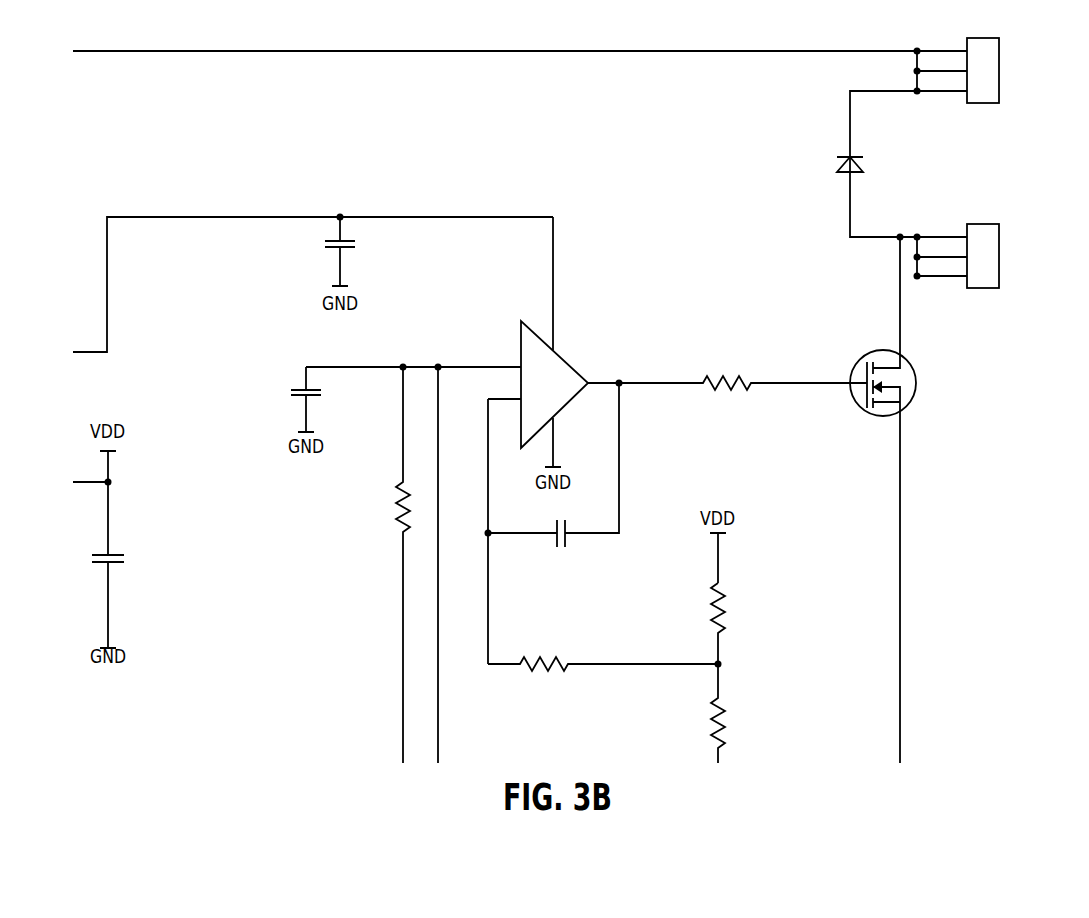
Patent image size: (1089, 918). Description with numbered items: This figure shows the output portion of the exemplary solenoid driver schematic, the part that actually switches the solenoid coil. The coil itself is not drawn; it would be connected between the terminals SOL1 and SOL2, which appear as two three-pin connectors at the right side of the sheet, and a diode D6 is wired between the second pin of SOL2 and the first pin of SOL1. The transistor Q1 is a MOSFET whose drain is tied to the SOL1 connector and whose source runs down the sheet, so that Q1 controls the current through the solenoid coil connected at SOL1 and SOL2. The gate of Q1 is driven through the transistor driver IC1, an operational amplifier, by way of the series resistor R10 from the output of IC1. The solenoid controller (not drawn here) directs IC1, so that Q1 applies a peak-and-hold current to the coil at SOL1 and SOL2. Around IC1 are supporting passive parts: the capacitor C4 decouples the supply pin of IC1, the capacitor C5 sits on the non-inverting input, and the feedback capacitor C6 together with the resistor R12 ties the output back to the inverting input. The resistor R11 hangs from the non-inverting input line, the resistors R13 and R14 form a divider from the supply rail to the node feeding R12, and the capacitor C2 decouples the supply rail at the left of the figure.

The terminal SOL2 is at (989, 71).
The terminal SOL1 is at (980, 256).
The diode, 800V (293062-001) D6 is at (899, 164).
The transistor Q1 is at (934, 500).
The resistor 100 Ohm (293104-1000) R10 is at (734, 405).
The transistor driver IC1 is at (566, 389).
The capacitor .01uF (293071-1034) C4 is at (423, 254).
The capacitor 100pF (293071-1024) C5 is at (216, 385).
The capacitor 1.0uF (428368-001) C2 is at (215, 598).
The resistor 15K (SMT) R11 is at (378, 565).
The capacitor 1000pF (293071-1024) C6 is at (583, 523).
The resistor 10K (428330-1002) R12 is at (605, 676).
The resistor 10K (428330-1002) R13 is at (801, 613).
The resistor 10K (428330-1002) R14 is at (801, 713).